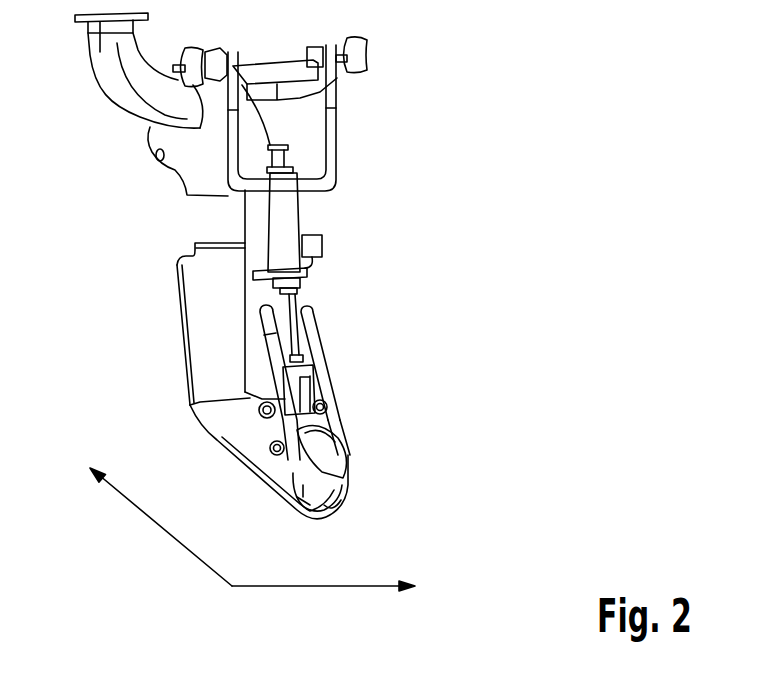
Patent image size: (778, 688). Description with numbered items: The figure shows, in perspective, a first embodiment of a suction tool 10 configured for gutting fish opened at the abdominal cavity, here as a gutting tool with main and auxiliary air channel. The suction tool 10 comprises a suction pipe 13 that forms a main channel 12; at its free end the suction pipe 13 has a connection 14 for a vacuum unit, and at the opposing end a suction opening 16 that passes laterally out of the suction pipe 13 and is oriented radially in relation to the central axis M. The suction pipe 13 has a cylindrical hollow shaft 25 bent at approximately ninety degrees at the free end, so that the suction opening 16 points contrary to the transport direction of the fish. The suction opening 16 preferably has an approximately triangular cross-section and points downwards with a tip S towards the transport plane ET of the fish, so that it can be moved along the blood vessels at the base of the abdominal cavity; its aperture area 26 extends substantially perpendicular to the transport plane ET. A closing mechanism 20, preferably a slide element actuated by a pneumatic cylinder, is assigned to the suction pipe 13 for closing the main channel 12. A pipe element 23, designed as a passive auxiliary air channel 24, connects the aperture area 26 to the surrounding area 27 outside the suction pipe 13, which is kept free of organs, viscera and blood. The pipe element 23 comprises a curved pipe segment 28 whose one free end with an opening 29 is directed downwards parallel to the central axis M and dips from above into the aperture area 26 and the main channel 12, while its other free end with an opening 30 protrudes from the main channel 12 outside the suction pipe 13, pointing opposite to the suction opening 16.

The suction tool 10 is at (567, 147).
The main channel 12 is at (193, 351).
The suction pipe 13 is at (238, 321).
The connection 14 is at (118, 43).
The suction opening 16 is at (338, 497).
The closing mechanism 20 is at (318, 385).
The pipe element 23 is at (333, 427).
The passive auxiliary air channel 24 is at (318, 462).
The cylindrical hollow shaft 25 is at (277, 307).
The aperture area 26 is at (300, 497).
The surrounding area 27 is at (367, 331).
The curved pipe segment 28 is at (333, 445).
The opening 29 is at (318, 500).
The opening 30 is at (303, 423).
The central axis M is at (270, 250).
The tip S is at (327, 510).
The transport plane ET is at (188, 560).